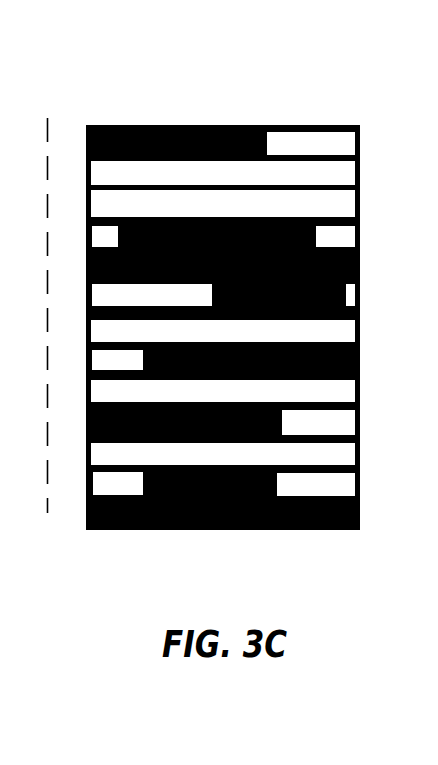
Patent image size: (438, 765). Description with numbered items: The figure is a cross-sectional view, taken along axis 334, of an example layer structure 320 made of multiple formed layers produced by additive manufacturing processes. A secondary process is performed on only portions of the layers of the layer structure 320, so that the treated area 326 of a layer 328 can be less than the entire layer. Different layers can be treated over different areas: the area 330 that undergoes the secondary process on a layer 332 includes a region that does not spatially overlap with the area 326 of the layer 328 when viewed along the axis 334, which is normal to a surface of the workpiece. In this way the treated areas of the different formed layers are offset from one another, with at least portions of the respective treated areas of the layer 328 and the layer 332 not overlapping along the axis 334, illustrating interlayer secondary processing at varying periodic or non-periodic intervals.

The layer structure 320 is at (95, 86).
The area 326 is at (183, 125).
The layer 328 is at (360, 140).
The area 330 is at (313, 217).
The layer 332 is at (338, 237).
The axis 334 is at (47, 440).